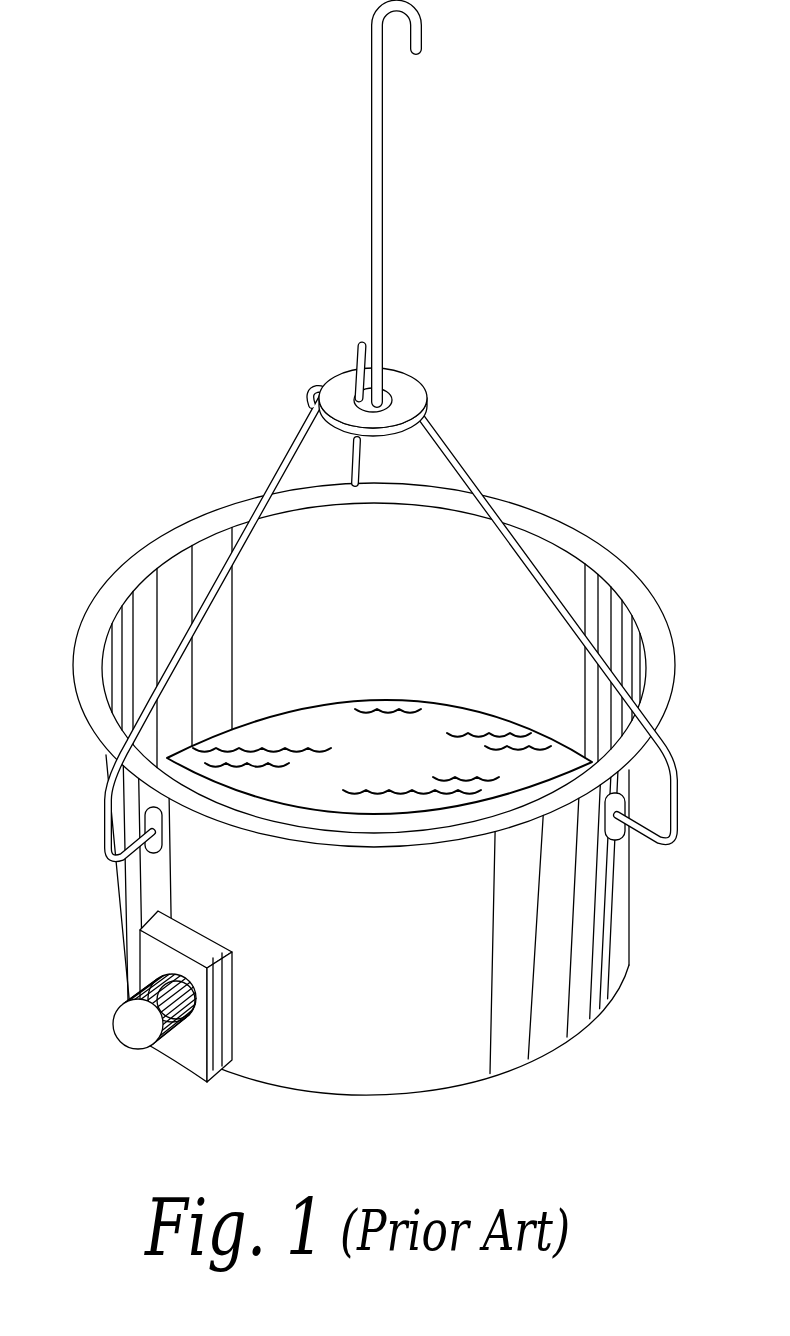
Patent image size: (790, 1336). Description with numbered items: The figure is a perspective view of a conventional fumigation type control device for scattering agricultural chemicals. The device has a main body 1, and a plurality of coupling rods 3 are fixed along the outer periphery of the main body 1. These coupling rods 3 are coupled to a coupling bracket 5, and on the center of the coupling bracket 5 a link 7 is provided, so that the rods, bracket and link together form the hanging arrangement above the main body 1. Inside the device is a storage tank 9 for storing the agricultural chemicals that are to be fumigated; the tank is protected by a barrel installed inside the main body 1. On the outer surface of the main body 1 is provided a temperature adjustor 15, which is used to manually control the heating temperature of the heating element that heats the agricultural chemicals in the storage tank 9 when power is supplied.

The main body 1 is at (545, 1003).
The coupling rods 3 is at (290, 445).
The coupling bracket 5 is at (405, 383).
The link 7 is at (370, 108).
The storage tank 9 is at (600, 592).
The temperature adjustor 15 is at (138, 1027).